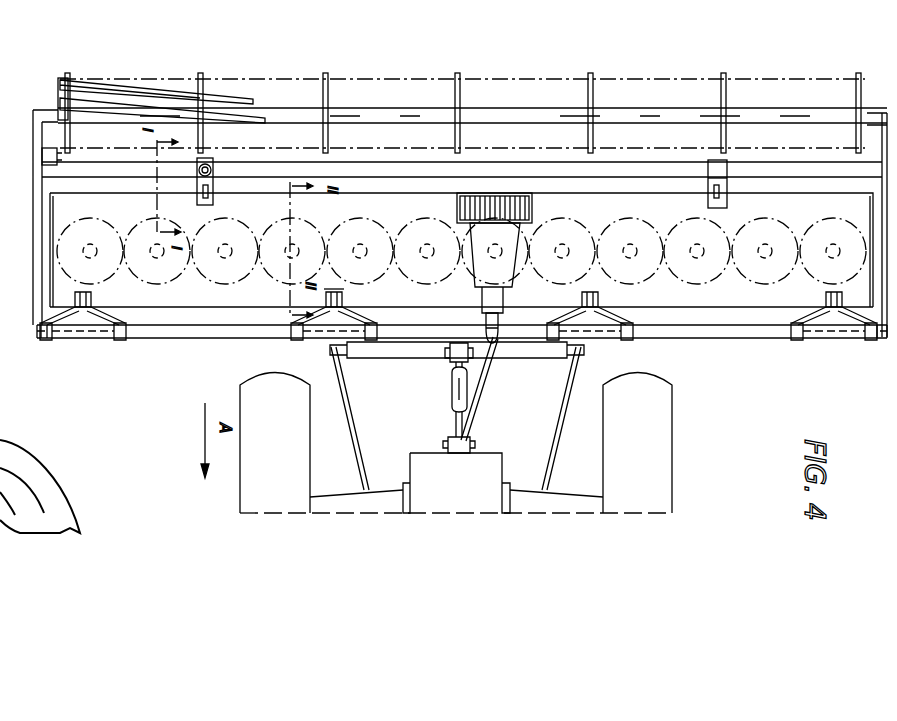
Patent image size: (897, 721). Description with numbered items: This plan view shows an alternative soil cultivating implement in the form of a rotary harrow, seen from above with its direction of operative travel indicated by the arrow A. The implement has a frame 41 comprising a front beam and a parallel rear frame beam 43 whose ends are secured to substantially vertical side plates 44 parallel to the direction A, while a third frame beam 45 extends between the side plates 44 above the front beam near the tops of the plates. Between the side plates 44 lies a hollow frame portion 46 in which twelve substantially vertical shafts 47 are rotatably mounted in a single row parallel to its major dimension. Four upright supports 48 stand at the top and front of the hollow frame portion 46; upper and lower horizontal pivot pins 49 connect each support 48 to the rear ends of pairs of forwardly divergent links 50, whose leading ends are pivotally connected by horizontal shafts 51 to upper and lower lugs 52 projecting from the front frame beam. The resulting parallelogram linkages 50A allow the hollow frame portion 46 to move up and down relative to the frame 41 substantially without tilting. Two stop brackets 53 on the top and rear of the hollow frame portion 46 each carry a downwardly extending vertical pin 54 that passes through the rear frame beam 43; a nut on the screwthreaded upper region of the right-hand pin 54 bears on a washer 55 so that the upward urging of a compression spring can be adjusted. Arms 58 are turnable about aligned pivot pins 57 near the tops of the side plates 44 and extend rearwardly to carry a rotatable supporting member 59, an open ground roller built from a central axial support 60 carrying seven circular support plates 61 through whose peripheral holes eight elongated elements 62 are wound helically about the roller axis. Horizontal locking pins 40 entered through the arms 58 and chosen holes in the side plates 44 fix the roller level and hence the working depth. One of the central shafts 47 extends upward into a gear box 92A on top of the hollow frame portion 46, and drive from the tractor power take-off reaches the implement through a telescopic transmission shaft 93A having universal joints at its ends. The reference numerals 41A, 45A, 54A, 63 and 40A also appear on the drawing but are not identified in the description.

The locking pins 40 is at (32, 150).
The frame 41 is at (803, 262).
The roll 41A is at (100, 220).
The rear frame beam 43 is at (42, 180).
The side plates 44 is at (36, 326).
The third frame beam 45 is at (37, 275).
The coupling 45A is at (483, 318).
The hollow frame portion 46 is at (218, 292).
The shafts 47 is at (733, 287).
The upright supports 48 is at (86, 296).
The pivot pins 49 is at (97, 297).
The links 50 is at (68, 340).
The parallelogram linkages 50A is at (575, 343).
The horizontal shafts 51 is at (96, 342).
The lugs 52 is at (118, 341).
The stop brackets 53 is at (214, 190).
The vertical pin 54 is at (36, 342).
The cross bar 54A is at (418, 360).
The washer 55 is at (845, 342).
The pivot pins 57 is at (686, 340).
The arms 58 is at (33, 230).
The supporting member 59 is at (752, 78).
The support 60 is at (636, 110).
The support plates 61 is at (326, 78).
The elongated elements 62 is at (228, 102).
The motor 63 is at (532, 205).
The gear box 92A is at (508, 250).
The telescopic transmission shaft 93A is at (478, 388).
The hanger cap 40A is at (345, 293).